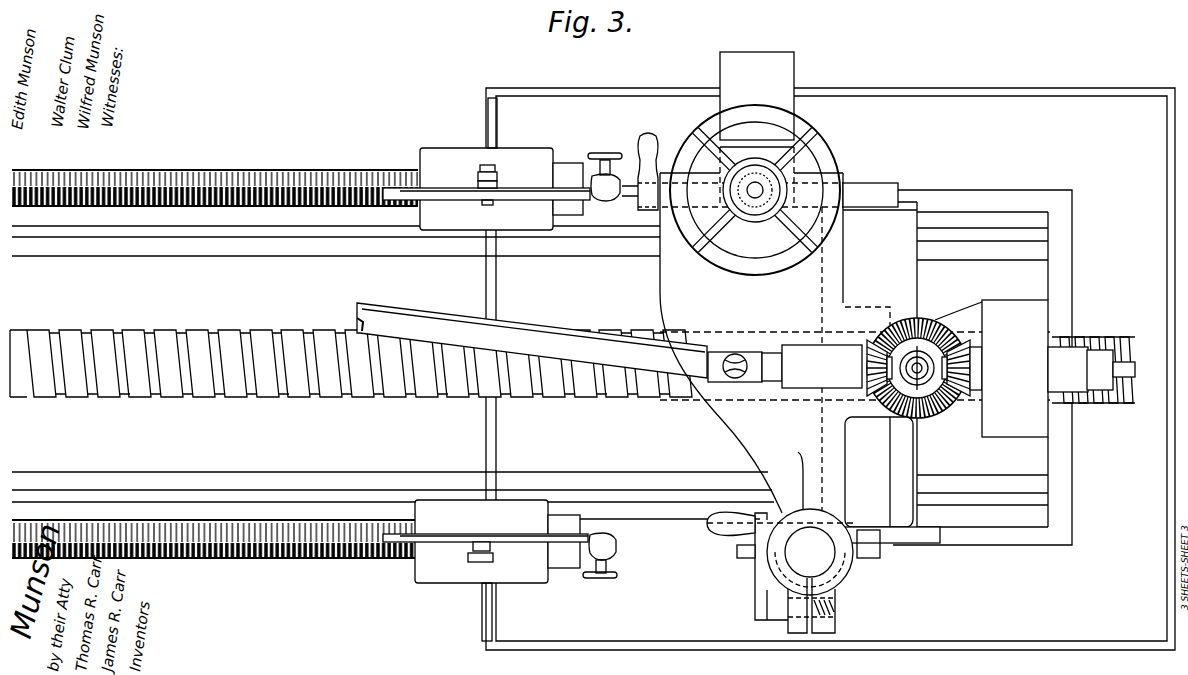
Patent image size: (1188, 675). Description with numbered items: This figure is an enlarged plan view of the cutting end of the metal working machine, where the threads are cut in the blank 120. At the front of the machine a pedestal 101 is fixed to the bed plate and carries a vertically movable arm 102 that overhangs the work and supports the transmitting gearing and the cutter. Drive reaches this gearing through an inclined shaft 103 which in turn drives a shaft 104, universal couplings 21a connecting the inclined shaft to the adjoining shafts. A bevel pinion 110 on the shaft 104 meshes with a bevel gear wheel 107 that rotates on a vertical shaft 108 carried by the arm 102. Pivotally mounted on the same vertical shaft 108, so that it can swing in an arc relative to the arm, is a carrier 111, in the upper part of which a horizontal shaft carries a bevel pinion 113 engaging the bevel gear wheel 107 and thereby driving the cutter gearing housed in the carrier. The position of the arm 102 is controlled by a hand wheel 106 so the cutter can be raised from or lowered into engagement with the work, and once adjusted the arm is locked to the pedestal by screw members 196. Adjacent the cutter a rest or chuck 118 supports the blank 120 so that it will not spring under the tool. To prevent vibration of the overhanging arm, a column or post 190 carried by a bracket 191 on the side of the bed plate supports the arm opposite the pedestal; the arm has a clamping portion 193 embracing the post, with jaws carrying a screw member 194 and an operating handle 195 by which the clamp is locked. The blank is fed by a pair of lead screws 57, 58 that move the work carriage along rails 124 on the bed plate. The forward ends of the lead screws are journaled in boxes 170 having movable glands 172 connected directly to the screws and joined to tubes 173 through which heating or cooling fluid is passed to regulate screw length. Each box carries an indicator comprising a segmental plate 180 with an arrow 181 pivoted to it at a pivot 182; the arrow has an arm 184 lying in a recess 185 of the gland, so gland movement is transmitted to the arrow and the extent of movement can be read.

The lead screw 57 is at (212, 556).
The lead screw 58 is at (302, 170).
The pedestal 101 is at (871, 190).
The vertically movable arm 102 is at (866, 300).
The inclined shaft 103 is at (532, 340).
The shaft 104 is at (775, 382).
The hand wheel 106 is at (818, 155).
The bevel gear wheel 107 is at (917, 378).
The vertical shaft 108 is at (912, 376).
The bevel pinion 110 is at (866, 370).
The carrier 111 is at (962, 408).
The bevel pinion 113 is at (972, 368).
The rest or chuck 118 is at (892, 487).
The blank 120 is at (530, 375).
The rails 124 is at (243, 231).
The box 170 is at (437, 147).
The movable gland 172 is at (577, 216).
The tube 173 is at (608, 201).
The segmental plate 180 is at (533, 196).
The arrow 181 is at (485, 191).
The pivot 182 is at (478, 182).
The arm 184 is at (527, 187).
The recess 185 is at (571, 166).
The column or post 190 is at (810, 523).
The bracket 191 is at (785, 568).
The clamping portion 193 is at (845, 572).
The screw member 194 is at (838, 606).
The operating handle 195 is at (718, 530).
The screw members 196 is at (650, 150).
The universal couplings 21a is at (731, 380).